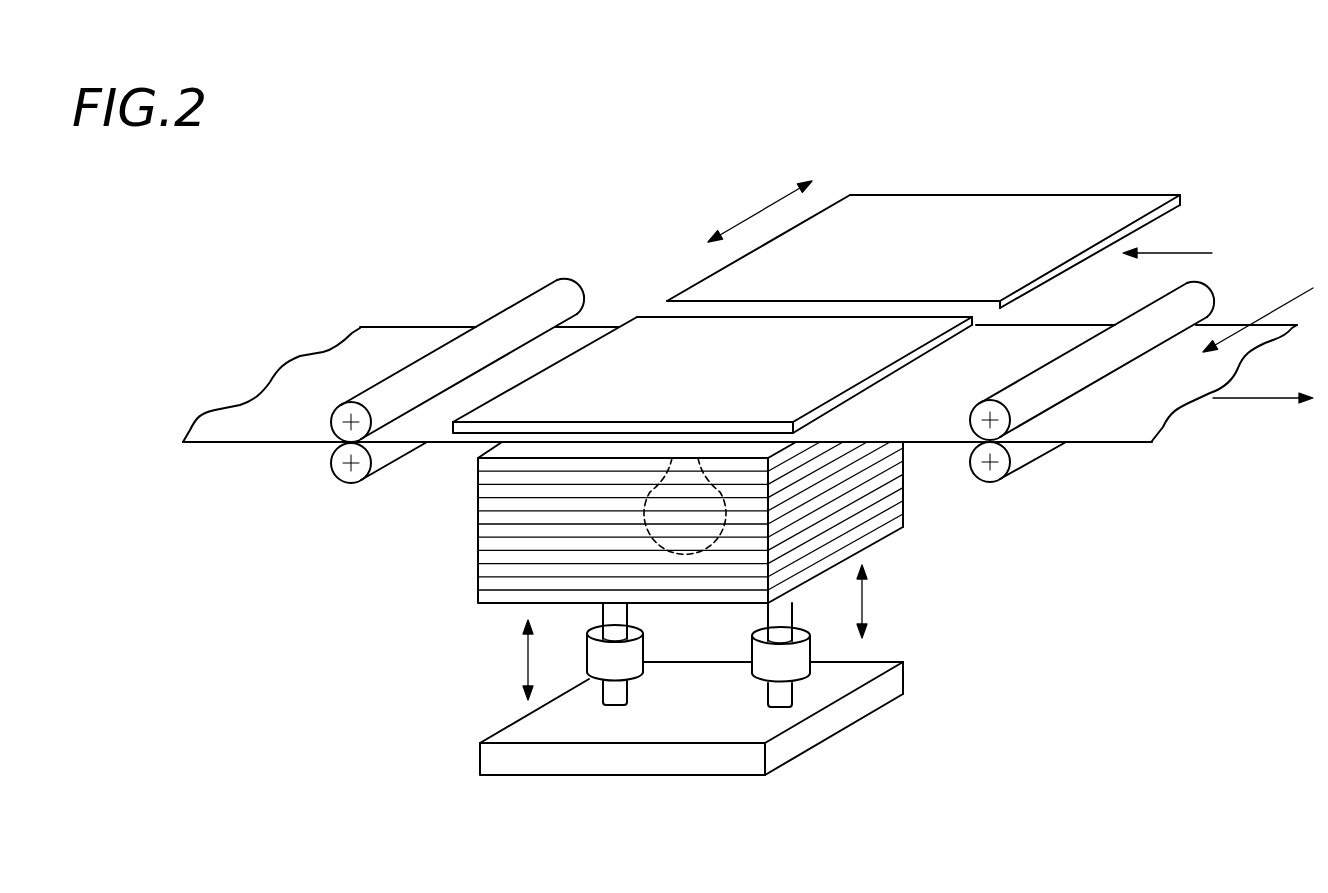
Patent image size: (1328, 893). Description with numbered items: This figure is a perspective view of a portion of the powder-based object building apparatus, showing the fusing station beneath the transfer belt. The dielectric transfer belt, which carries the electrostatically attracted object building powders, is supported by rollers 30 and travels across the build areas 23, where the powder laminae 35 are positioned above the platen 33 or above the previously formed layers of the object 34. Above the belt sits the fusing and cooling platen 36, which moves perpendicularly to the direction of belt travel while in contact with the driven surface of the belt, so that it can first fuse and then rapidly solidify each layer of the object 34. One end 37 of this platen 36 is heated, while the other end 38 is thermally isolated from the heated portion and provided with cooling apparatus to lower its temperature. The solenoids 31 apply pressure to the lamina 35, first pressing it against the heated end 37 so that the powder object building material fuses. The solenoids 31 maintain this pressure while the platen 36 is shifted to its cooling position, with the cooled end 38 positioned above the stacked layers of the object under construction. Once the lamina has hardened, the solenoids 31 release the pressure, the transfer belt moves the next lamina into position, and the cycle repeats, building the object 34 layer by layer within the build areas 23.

The build areas 23 is at (1010, 162).
The rollers 30 is at (331, 421).
The solenoids 31 is at (528, 657).
The platen 33 is at (460, 606).
The object 34 is at (697, 515).
The powder laminae 35 is at (535, 527).
The fusing and cooling platen 36 is at (1187, 257).
The heated end of platen 37 is at (712, 375).
The cooled end of platen 38 is at (923, 244).